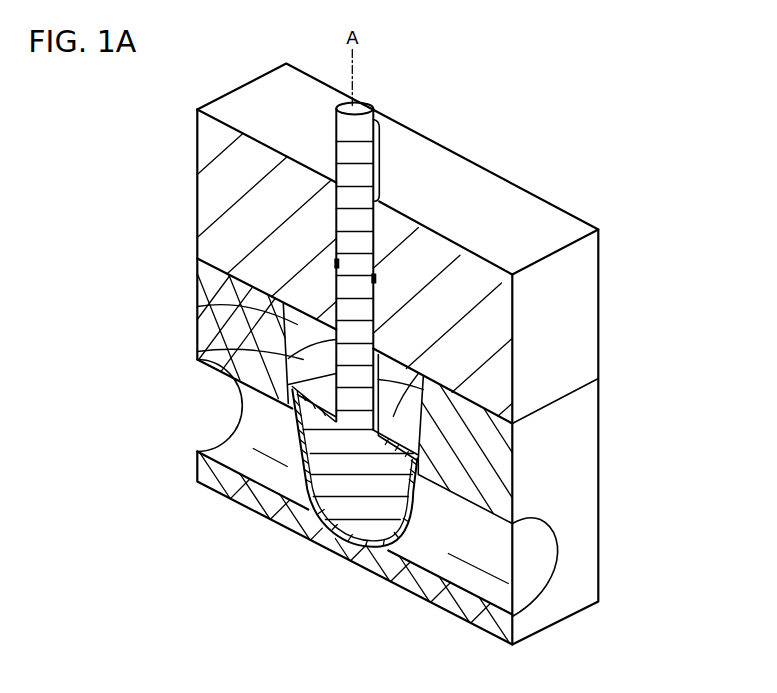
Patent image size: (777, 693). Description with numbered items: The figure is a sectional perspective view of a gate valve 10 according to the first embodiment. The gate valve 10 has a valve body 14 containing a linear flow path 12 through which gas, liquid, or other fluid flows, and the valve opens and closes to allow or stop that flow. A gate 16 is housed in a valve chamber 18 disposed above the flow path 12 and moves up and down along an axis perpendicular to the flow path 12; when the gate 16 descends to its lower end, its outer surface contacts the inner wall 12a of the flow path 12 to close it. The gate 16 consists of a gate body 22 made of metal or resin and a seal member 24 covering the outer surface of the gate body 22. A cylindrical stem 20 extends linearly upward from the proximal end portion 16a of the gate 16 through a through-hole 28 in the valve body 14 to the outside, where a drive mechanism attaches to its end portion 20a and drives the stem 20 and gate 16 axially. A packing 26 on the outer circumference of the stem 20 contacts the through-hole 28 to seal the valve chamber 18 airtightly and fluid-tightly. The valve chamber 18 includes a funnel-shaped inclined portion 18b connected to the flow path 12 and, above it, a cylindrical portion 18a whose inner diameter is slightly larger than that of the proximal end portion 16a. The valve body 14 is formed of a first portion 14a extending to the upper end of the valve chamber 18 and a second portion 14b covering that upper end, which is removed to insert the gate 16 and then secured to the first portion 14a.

The gate valve 10 is at (509, 86).
The flow path 12 is at (541, 551).
The inner wall of the flow path 12a is at (535, 535).
The valve body 14 is at (640, 408).
The first portion 14a is at (598, 447).
The second portion 14b is at (598, 300).
The gate 16 is at (296, 434).
The proximal end portion of the gate 16a is at (407, 385).
The valve chamber 18 is at (388, 370).
The cylindrical portion 18a is at (298, 333).
The inclined portion 18b is at (303, 358).
The stem 20 is at (345, 137).
The end portion of the stem 20a is at (362, 113).
The gate body 22 is at (330, 498).
The seal member 24 is at (363, 545).
The packing 26 is at (376, 278).
The through-hole 28 is at (350, 218).